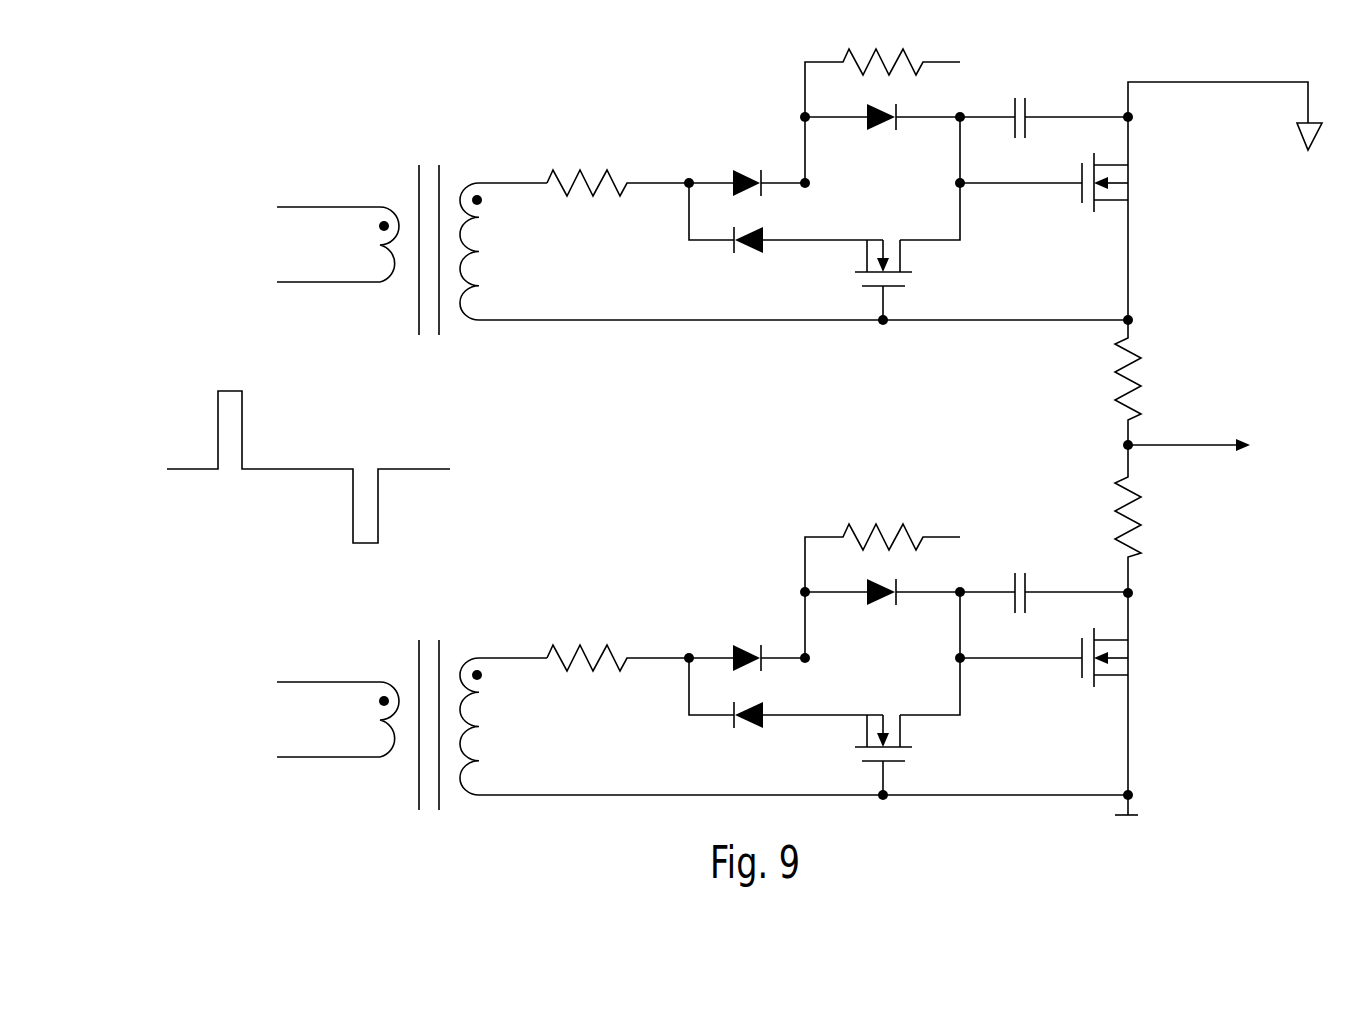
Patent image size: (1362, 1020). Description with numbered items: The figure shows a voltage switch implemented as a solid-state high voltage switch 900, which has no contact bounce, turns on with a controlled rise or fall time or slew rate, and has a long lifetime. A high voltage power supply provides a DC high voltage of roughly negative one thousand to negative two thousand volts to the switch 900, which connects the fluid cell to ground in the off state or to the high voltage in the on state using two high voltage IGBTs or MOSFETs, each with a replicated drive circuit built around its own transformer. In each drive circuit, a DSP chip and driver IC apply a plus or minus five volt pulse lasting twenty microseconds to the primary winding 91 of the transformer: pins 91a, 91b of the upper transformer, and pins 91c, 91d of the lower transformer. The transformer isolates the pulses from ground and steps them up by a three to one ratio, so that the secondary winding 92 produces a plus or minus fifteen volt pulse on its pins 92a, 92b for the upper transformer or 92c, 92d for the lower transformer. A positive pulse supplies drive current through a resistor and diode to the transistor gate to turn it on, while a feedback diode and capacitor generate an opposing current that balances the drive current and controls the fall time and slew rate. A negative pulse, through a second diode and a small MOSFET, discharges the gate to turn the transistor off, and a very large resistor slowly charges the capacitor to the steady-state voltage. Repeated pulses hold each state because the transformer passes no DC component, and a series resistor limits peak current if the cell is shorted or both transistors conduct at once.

The solid-state high voltage switch 900 is at (728, 61).
The primary winding 91 is at (352, 168).
The primary winding pin 91a is at (328, 196).
The primary winding pin 91b is at (328, 268).
The primary winding pin 91c is at (328, 671).
The primary winding pin 91d is at (328, 743).
The secondary winding 92 is at (498, 130).
The secondary winding pin 92a is at (513, 168).
The secondary winding pin 92b is at (803, 306).
The secondary winding pin 92c is at (513, 643).
The secondary winding pin 92d is at (803, 781).